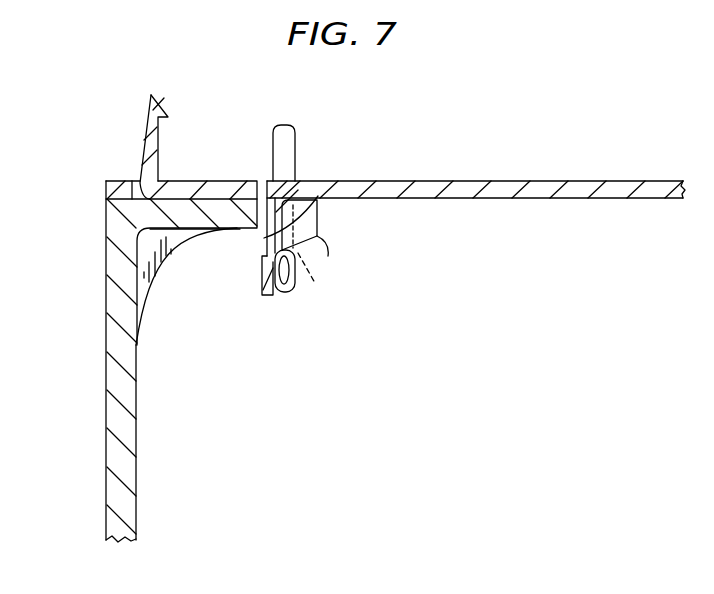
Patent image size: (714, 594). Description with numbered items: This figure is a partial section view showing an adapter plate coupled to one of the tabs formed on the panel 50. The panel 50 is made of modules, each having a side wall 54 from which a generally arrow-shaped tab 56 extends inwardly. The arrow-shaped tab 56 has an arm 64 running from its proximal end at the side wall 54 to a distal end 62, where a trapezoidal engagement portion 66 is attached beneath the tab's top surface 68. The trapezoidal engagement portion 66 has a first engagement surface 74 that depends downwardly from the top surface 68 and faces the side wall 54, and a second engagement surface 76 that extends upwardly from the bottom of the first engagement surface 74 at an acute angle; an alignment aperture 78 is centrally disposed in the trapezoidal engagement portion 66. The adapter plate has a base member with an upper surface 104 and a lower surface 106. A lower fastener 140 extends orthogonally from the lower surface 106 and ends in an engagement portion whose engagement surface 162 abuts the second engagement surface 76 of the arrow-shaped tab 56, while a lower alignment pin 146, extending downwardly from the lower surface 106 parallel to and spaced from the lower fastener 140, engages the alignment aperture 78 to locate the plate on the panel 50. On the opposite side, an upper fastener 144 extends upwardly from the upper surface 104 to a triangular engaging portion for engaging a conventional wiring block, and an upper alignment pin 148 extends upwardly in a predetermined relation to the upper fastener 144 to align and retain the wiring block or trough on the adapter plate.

The panel 50 is at (100, 382).
The side wall 54 is at (137, 410).
The arrow-shaped tab 56 is at (239, 238).
The distal end 62 is at (247, 198).
The arm 64 is at (187, 231).
The trapezoidal engagement portion 66 is at (328, 215).
The top surface 68 is at (307, 202).
The first engagement surface 74 is at (262, 253).
The second engagement surface 76 is at (331, 262).
The alignment aperture 78 is at (310, 284).
The upper surface 104 is at (522, 181).
The lower surface 106 is at (489, 200).
The lower fastener 140 is at (318, 196).
The upper fastener 144 is at (140, 110).
The lower alignment pin 146 is at (287, 296).
The upper alignment pin 148 is at (291, 124).
The engagement surface 162 is at (281, 294).